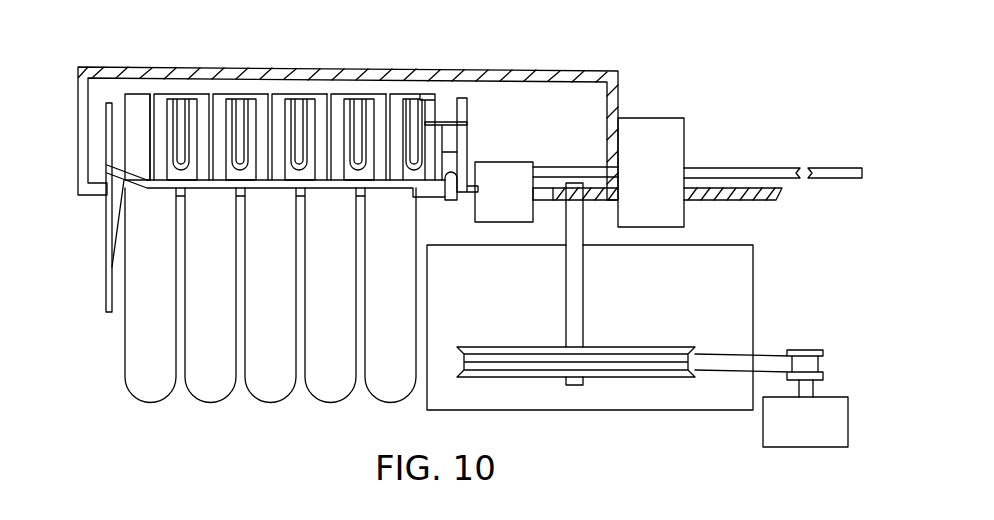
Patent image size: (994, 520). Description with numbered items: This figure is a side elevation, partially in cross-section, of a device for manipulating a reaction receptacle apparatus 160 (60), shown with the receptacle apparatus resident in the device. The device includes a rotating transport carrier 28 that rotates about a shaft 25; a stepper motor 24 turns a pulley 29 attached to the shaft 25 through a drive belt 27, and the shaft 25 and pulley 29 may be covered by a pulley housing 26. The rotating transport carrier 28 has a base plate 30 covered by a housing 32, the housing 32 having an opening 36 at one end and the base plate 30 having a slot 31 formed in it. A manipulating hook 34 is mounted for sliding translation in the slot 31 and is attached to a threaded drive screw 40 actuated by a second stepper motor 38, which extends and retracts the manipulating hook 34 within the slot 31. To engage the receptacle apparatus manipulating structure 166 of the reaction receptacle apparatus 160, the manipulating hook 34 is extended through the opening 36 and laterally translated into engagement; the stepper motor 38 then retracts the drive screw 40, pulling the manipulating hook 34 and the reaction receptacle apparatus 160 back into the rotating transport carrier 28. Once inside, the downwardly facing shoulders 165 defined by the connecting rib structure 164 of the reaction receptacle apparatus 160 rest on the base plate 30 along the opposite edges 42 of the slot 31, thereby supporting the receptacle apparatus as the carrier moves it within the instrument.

The stepper motor 24 is at (763, 437).
The shaft 25 is at (584, 285).
The pulley housing 26 is at (755, 287).
The drive belt 27 is at (769, 351).
The rotating transport carrier 28 is at (583, 62).
The pulley 29 is at (497, 378).
The base plate 30 is at (765, 201).
The slot 31 is at (545, 192).
The housing 32 is at (479, 67).
The manipulating hook 34 is at (509, 159).
The opening 36 is at (79, 136).
The stepper motor 38 is at (668, 112).
The threaded drive screw 40 is at (776, 174).
The opposite edges 42 is at (98, 183).
The reaction receptacle apparatus 60 is at (113, 388).
The reaction receptacle apparatus 160 is at (248, 330).
The connecting rib structure 164 is at (402, 190).
The downwardly facing shoulders 165 is at (148, 189).
The receptacle apparatus manipulating structure 166 is at (474, 112).